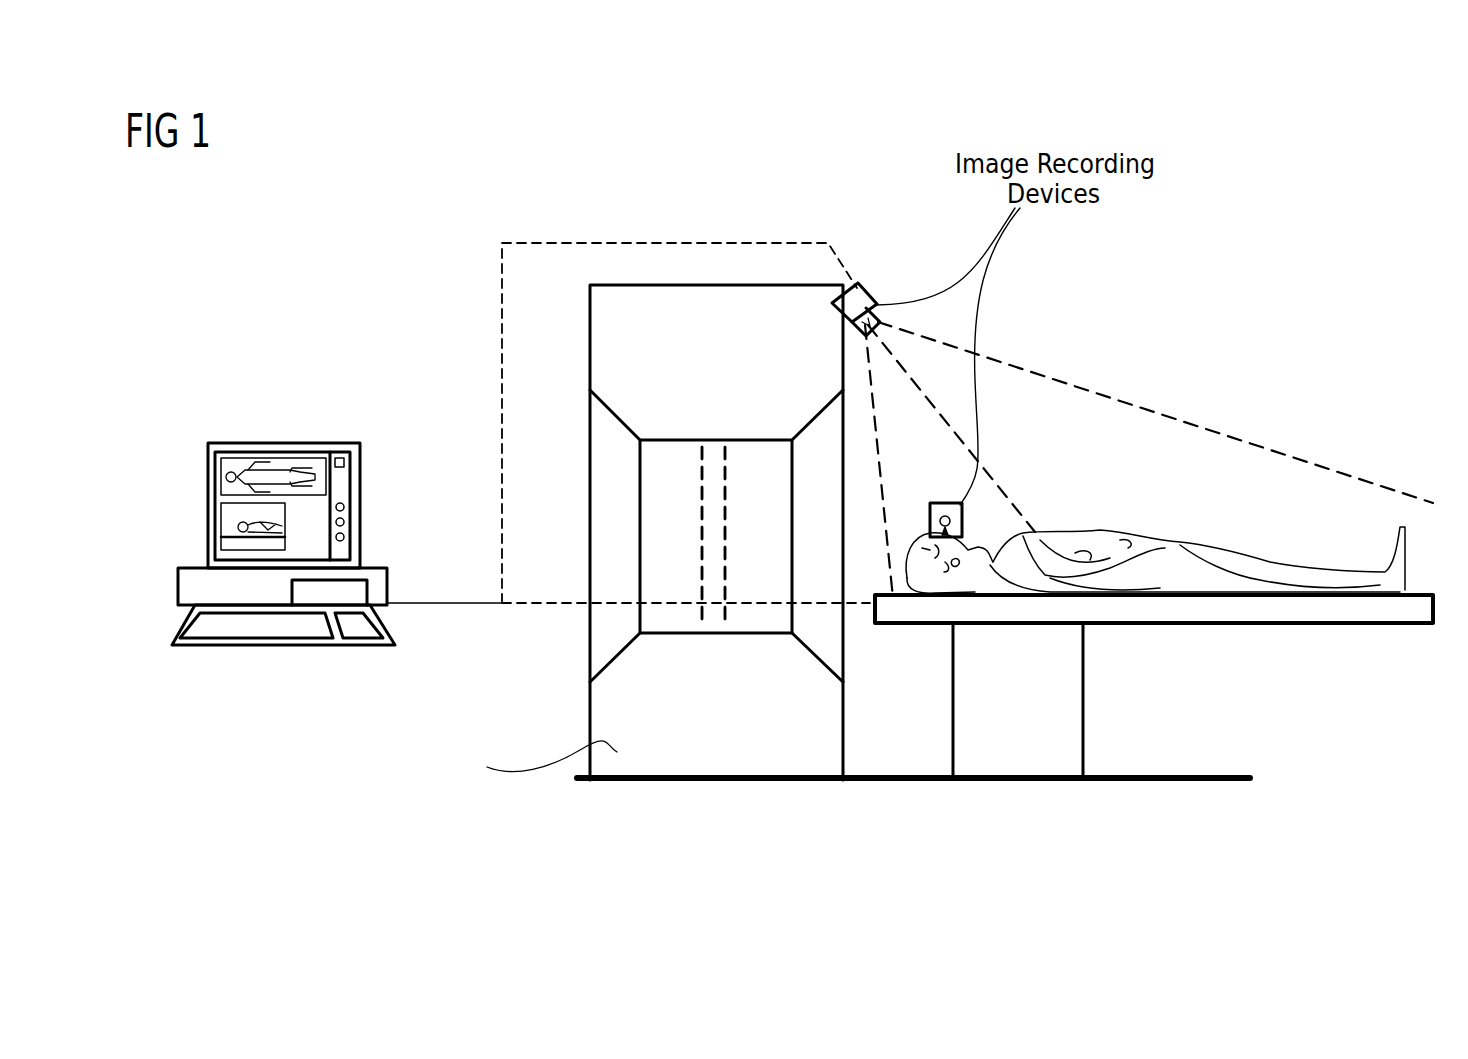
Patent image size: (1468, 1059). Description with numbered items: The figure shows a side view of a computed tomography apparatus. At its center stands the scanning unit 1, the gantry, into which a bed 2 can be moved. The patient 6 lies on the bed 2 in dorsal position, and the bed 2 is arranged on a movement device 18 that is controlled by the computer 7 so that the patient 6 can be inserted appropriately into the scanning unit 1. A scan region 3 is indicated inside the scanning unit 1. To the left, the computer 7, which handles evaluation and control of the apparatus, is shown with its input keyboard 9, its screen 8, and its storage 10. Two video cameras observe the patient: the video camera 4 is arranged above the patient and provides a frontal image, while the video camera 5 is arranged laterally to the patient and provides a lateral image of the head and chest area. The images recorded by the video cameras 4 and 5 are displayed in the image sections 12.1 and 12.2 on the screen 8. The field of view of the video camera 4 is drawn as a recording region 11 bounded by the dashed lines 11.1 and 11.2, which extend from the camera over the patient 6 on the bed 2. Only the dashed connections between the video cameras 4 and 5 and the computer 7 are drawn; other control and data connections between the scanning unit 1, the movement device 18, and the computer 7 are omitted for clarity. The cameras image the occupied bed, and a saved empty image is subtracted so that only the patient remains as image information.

The scanning unit 1 is at (587, 722).
The bed 2 is at (1323, 624).
The scan region / imaging plane 3 is at (710, 457).
The video camera 4 is at (872, 298).
The video camera 5 is at (962, 507).
The patient 6 is at (1103, 530).
The computer 7 is at (178, 593).
The screen 8 is at (318, 440).
The input keyboard 9 is at (296, 647).
The storage 10 is at (353, 592).
The recording region of camera 11 is at (1000, 483).
The recording region boundary 11.1 is at (901, 461).
The recording region boundary 11.2 is at (1042, 373).
The image section 12.1 is at (243, 460).
The image section 12.2 is at (228, 527).
The movement device 18 is at (1085, 720).